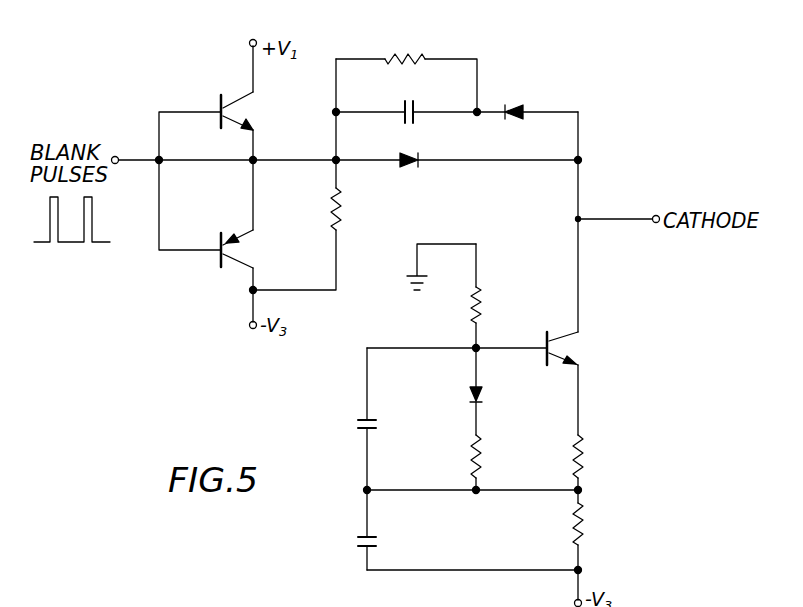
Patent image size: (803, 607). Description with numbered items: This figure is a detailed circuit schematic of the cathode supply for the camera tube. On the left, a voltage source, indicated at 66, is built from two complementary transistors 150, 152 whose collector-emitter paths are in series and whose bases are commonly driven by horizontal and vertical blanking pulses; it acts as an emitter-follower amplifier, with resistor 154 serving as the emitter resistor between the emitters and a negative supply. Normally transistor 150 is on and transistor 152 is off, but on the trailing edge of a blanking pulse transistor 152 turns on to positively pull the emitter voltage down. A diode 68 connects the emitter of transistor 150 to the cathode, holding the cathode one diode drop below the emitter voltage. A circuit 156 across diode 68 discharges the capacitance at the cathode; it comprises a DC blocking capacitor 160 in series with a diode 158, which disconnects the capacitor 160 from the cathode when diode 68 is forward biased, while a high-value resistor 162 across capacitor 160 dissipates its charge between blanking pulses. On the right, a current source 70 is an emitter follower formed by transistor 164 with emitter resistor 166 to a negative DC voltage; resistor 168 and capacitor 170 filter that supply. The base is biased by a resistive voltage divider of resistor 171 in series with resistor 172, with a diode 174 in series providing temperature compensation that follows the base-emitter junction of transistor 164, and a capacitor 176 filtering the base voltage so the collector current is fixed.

The blanking pulse amplifier 66 is at (212, 193).
The diode 68 is at (418, 167).
The current source 70 is at (516, 337).
The transistor 150 is at (256, 98).
The transistor 152 is at (247, 248).
The resistor 154 is at (339, 196).
The circuit 156 is at (525, 98).
The diode 158 is at (508, 121).
The DC blocking capacitor 160 is at (404, 122).
The resistor 162 is at (412, 58).
The transistor 164 is at (563, 333).
The emitter resistor 166 is at (585, 446).
The resistor 168 is at (584, 524).
The capacitor 170 is at (372, 535).
The resistor 171 is at (468, 312).
The resistor 172 is at (471, 456).
The diode 174 is at (486, 394).
The capacitor 176 is at (362, 416).